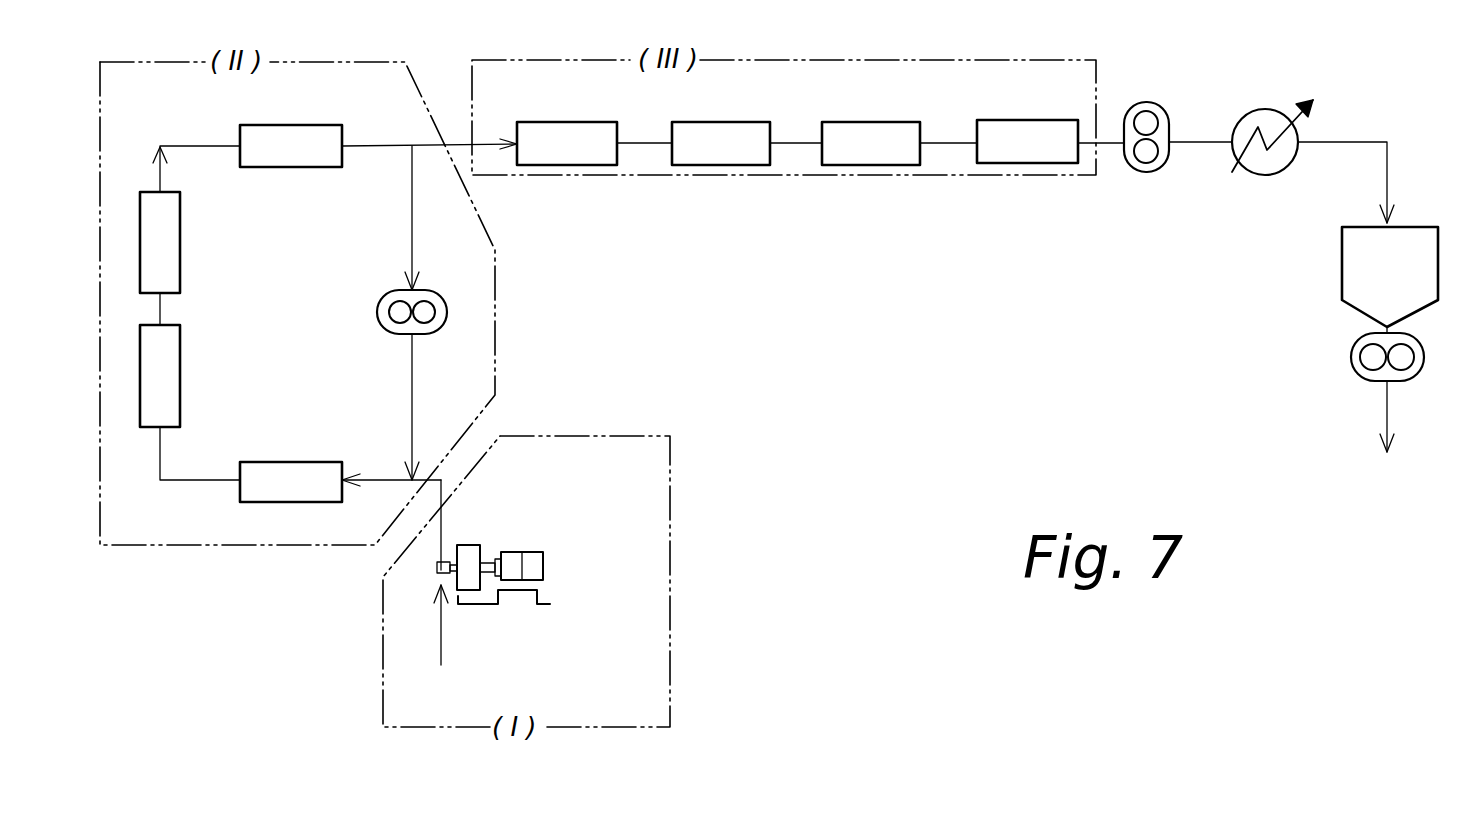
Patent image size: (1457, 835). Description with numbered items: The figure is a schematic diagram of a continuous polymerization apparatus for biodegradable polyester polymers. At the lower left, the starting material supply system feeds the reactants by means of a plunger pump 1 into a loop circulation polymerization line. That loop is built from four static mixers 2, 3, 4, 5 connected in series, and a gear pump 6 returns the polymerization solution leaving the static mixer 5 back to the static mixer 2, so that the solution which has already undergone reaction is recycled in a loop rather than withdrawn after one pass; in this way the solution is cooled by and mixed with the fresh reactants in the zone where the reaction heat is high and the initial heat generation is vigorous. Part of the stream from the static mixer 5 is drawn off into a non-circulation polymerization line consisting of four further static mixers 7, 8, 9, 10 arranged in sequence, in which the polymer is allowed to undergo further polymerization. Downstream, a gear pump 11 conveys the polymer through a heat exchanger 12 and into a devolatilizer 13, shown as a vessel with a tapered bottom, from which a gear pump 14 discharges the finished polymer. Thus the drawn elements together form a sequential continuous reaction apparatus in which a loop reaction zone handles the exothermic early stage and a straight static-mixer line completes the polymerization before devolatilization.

The plunger pump 1 is at (547, 568).
The static mixer 2 is at (291, 482).
The static mixer 3 is at (160, 376).
The static mixer 4 is at (160, 242).
The static mixer 5 is at (291, 146).
The gear pump 6 is at (380, 305).
The static mixer 7 is at (567, 143).
The static mixer 8 is at (721, 143).
The static mixer 9 is at (871, 143).
The static mixer 10 is at (1027, 141).
The gear pump 11 is at (1162, 104).
The heat exchanger 12 is at (1265, 108).
The devolatilizer 13 is at (1342, 258).
The gear pump 14 is at (1351, 355).